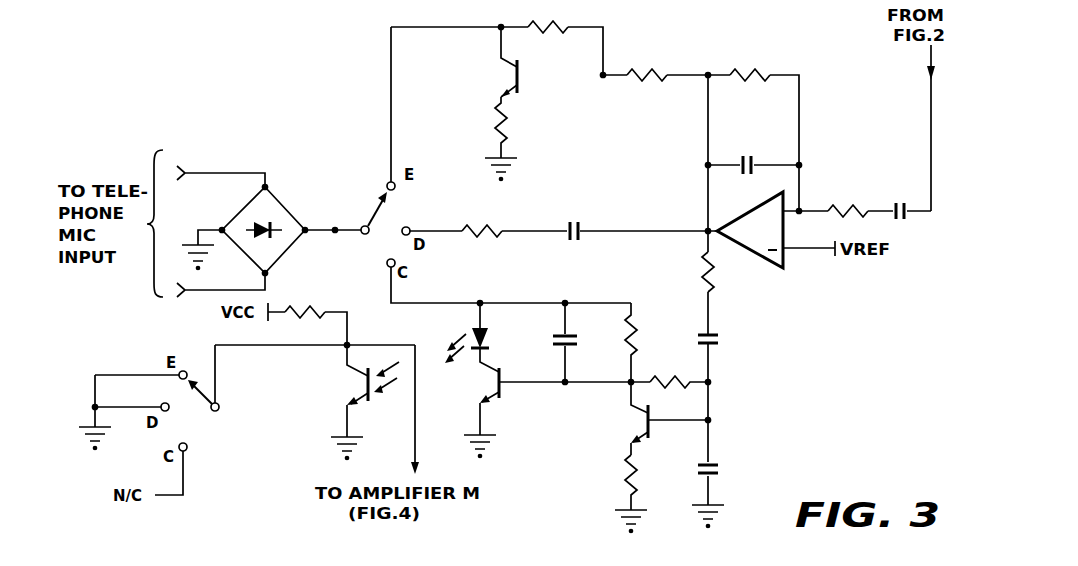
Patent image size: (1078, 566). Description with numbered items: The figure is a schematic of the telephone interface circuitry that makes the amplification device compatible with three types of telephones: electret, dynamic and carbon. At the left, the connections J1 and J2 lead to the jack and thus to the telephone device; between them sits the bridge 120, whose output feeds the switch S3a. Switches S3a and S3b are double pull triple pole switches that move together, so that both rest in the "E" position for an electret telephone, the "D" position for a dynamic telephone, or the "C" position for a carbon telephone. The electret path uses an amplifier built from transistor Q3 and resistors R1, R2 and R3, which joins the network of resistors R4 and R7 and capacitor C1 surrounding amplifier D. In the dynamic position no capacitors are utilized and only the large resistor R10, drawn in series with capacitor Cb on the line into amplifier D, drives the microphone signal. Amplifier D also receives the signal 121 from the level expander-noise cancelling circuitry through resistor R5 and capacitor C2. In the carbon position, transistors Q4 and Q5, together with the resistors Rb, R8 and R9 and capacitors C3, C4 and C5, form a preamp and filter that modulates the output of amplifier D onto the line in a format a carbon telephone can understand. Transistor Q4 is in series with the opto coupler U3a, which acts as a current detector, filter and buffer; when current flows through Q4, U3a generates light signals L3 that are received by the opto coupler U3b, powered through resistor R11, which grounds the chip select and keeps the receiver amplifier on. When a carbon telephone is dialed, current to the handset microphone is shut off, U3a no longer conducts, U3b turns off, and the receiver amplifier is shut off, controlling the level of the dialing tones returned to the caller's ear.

The bridge 120 is at (243, 217).
The signal from the level expander-noise cancelling circuitry 121 is at (931, 110).
The resistor R1 is at (548, 37).
The resistor R2 is at (647, 86).
The resistor R3 is at (484, 127).
The resistor R4 is at (750, 86).
The resistor R5 is at (848, 201).
The resistor R7 is at (723, 272).
The resistor R8 is at (679, 372).
The resistor R9 is at (607, 482).
The resistor R10 is at (482, 220).
The resistor R11 is at (305, 321).
The resistor Rb is at (646, 342).
The capacitor C1 is at (753, 175).
The capacitor C2 is at (898, 200).
The capacitor C3 is at (578, 342).
The capacitor C4 is at (726, 339).
The capacitor C5 is at (722, 461).
The capacitor Cb is at (571, 219).
The transistor Q3 is at (491, 62).
The transistor Q4 is at (548, 401).
The transistor Q5 is at (653, 418).
The opto coupler U3a is at (500, 337).
The opto coupler U3b is at (328, 391).
The light signals L3 is at (456, 336).
The switch S3a is at (364, 205).
The switch S3b is at (200, 411).
The jack connection J1 is at (217, 167).
The jack connection J2 is at (216, 296).
The amplifier D is at (765, 241).